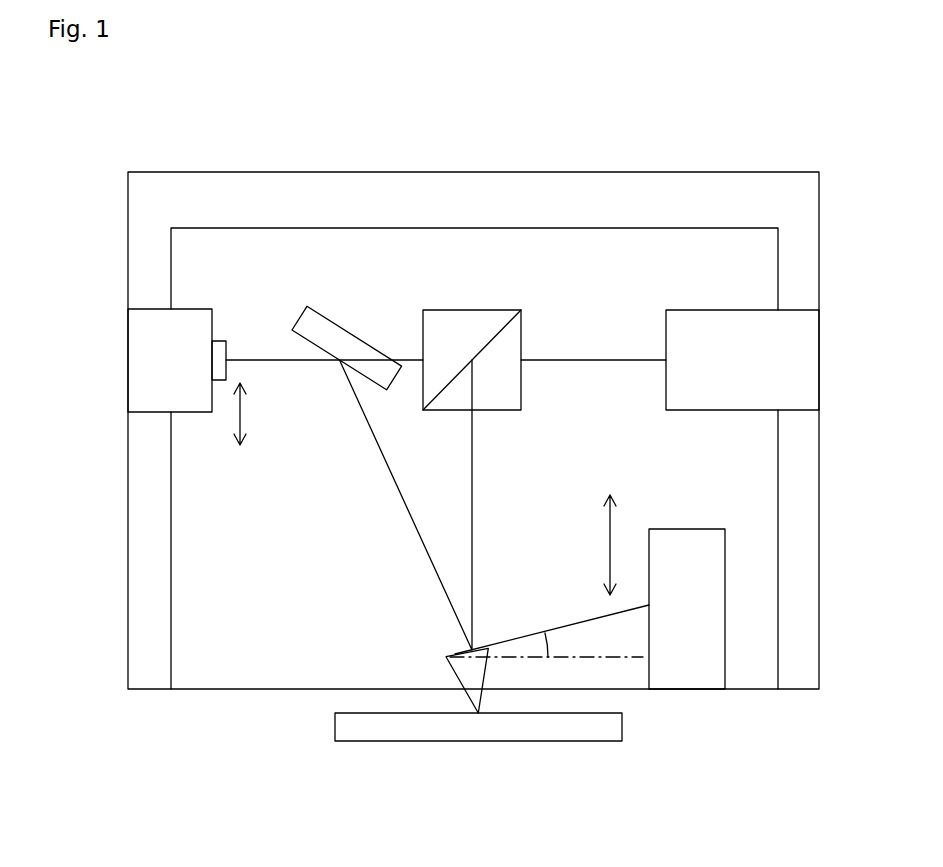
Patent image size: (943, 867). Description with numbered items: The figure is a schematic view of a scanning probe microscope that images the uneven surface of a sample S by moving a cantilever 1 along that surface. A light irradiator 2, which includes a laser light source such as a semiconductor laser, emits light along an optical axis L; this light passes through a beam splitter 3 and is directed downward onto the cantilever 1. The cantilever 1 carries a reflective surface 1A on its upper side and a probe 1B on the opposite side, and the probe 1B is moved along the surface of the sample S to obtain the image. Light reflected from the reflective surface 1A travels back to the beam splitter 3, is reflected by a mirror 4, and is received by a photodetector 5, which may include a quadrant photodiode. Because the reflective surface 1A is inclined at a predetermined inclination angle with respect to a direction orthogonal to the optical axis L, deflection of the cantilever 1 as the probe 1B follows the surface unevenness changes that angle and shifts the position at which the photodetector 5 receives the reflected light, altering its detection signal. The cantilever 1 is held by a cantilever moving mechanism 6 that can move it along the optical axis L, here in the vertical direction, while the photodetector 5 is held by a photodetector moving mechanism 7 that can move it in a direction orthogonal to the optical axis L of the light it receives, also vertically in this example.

The cantilever 1 is at (503, 622).
The reflective surface 1A is at (458, 643).
The probe 1B is at (453, 677).
The light irradiator 2 is at (712, 310).
The beam splitter 3 is at (472, 310).
The mirror 4 is at (342, 323).
The photodetector 5 is at (226, 345).
The cantilever moving mechanism 6 is at (695, 678).
The photodetector moving mechanism 7 is at (188, 413).
The optical axis L is at (572, 360).
The sample S is at (425, 740).